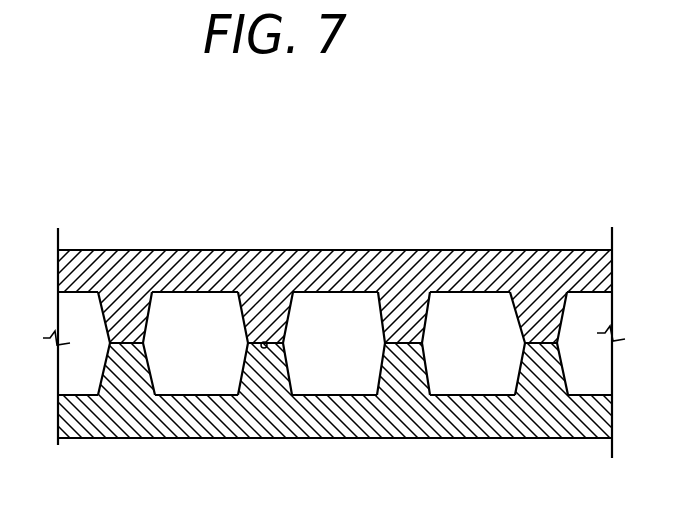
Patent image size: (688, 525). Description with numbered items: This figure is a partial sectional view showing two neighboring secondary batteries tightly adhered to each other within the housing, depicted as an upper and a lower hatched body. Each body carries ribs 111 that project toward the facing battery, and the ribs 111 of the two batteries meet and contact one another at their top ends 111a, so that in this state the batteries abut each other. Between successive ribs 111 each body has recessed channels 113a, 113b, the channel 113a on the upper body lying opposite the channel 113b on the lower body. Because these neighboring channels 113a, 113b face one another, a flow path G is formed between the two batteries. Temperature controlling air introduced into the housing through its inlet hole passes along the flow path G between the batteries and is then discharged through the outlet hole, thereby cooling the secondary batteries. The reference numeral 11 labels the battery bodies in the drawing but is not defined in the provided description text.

The substrate plate 11 is at (517, 250).
The rib 111 is at (163, 319).
The top end of rib 111a is at (270, 346).
The channel 113a is at (543, 310).
The channel 113b is at (533, 372).
The flow path G is at (352, 296).